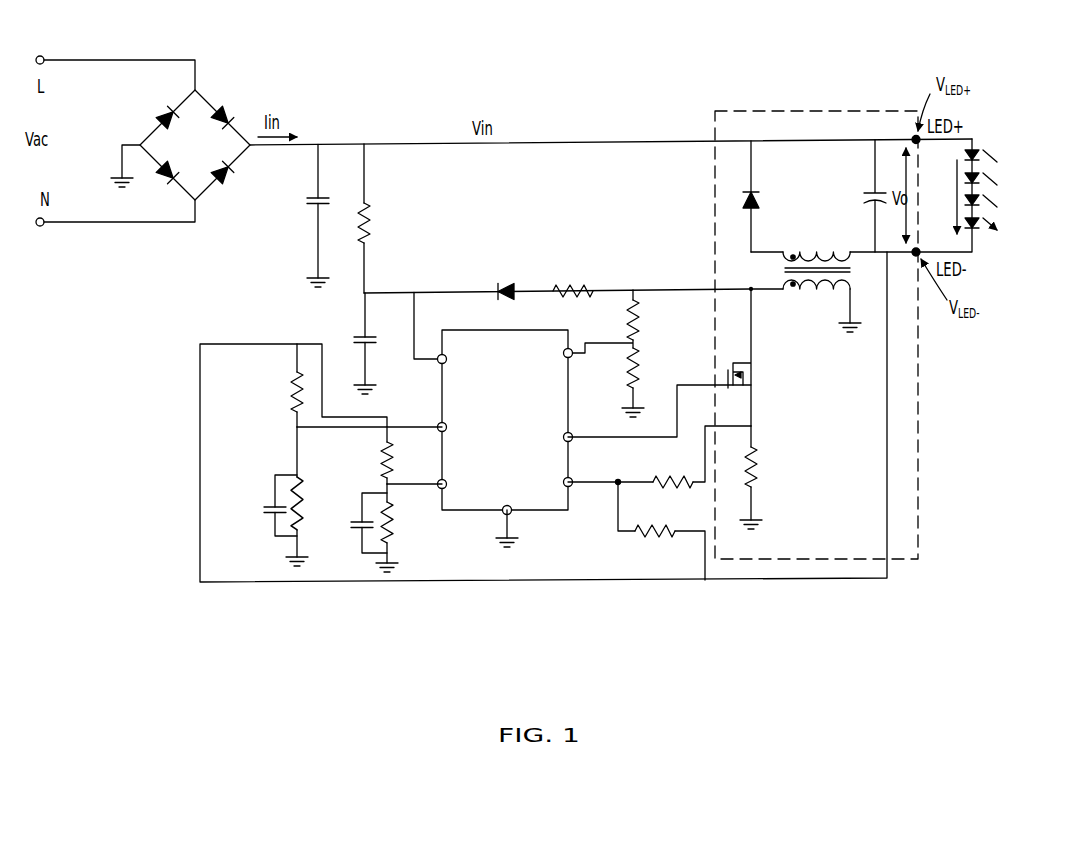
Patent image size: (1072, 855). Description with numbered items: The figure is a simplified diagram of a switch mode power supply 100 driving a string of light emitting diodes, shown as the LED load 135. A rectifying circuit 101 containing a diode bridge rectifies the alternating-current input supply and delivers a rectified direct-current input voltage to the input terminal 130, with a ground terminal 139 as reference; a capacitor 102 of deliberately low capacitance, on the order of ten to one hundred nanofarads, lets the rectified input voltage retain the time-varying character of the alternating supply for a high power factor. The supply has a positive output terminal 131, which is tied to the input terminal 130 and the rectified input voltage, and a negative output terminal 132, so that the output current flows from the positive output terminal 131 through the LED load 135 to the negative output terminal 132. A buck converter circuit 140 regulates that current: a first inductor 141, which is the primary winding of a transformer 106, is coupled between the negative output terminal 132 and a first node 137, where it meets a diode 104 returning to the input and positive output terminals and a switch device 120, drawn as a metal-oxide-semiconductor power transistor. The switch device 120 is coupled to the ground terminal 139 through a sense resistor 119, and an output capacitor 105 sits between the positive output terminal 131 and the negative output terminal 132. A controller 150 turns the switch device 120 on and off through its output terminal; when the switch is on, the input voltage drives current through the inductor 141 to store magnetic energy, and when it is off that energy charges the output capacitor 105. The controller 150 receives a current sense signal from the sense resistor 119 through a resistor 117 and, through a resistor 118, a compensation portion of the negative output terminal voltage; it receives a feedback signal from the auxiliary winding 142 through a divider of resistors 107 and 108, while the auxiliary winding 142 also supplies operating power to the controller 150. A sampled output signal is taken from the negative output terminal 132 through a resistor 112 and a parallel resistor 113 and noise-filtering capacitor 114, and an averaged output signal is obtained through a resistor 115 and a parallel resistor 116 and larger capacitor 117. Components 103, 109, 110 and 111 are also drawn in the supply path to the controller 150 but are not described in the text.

The switch mode power supply 100 is at (750, 37).
The rectifying circuit 101 is at (186, 140).
The capacitor 102 is at (301, 235).
The startup resistor 103 is at (384, 218).
The diode 104 is at (765, 196).
The output capacitor 105 is at (860, 196).
The transformer 106 is at (833, 276).
The resistor 107 is at (619, 321).
The resistor 108 is at (651, 378).
The resistor 109 is at (576, 278).
The diode 110 is at (504, 279).
The supply capacitor 111 is at (356, 339).
The resistor 112 is at (277, 385).
The resistor 113 is at (313, 492).
The capacitor 114 is at (267, 505).
The resistor 115 is at (367, 455).
The resistor 116 is at (406, 523).
The capacitor 117 is at (536, 489).
The resistor 118 is at (661, 531).
The current sense resistor 119 is at (772, 473).
The switch device 120 is at (755, 357).
The input terminal 130 is at (328, 157).
The positive output terminal 131 is at (903, 127).
The negative output terminal 132 is at (903, 264).
The LED load 135 is at (999, 137).
The first node 137 is at (734, 264).
The ground terminal 139 is at (486, 379).
The buck converter circuit 140 is at (840, 110).
The first inductor 141 is at (833, 245).
The auxiliary winding 142 is at (800, 301).
The controller 150 is at (515, 408).